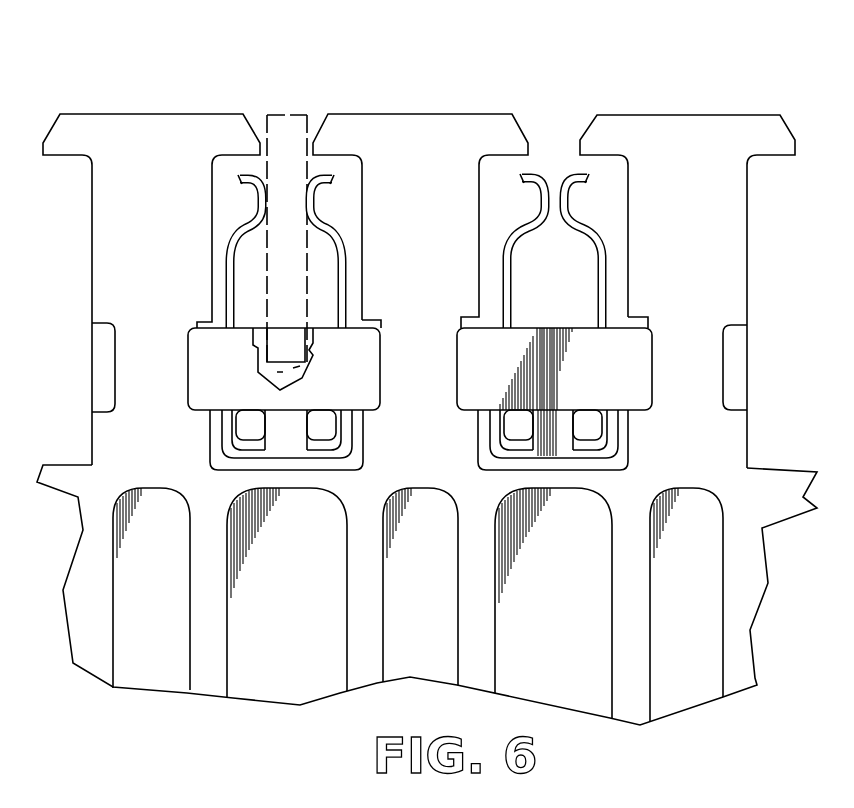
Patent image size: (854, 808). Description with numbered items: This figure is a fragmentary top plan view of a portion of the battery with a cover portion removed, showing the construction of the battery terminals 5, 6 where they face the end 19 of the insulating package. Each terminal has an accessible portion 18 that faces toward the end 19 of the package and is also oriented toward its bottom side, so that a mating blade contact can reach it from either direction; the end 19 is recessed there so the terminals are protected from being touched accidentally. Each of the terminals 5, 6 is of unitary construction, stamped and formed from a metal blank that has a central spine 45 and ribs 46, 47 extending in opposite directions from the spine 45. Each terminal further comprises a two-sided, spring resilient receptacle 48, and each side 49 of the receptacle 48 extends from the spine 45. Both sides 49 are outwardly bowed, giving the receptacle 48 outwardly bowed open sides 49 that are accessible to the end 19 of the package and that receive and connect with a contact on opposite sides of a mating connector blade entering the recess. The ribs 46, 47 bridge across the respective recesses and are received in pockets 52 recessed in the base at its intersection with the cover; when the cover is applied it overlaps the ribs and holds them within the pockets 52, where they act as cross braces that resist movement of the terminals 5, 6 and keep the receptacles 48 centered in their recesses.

The battery terminal 5 is at (415, 200).
The battery terminal 6 is at (304, 198).
The accessible portion 18 is at (507, 231).
The end of the package 19 is at (672, 113).
The central spine 45 is at (562, 520).
The rib 46 is at (475, 350).
The rib 47 is at (642, 358).
The receptacle 48 is at (622, 260).
The side of the receptacle 49 is at (570, 208).
The pocket 52 is at (692, 425).